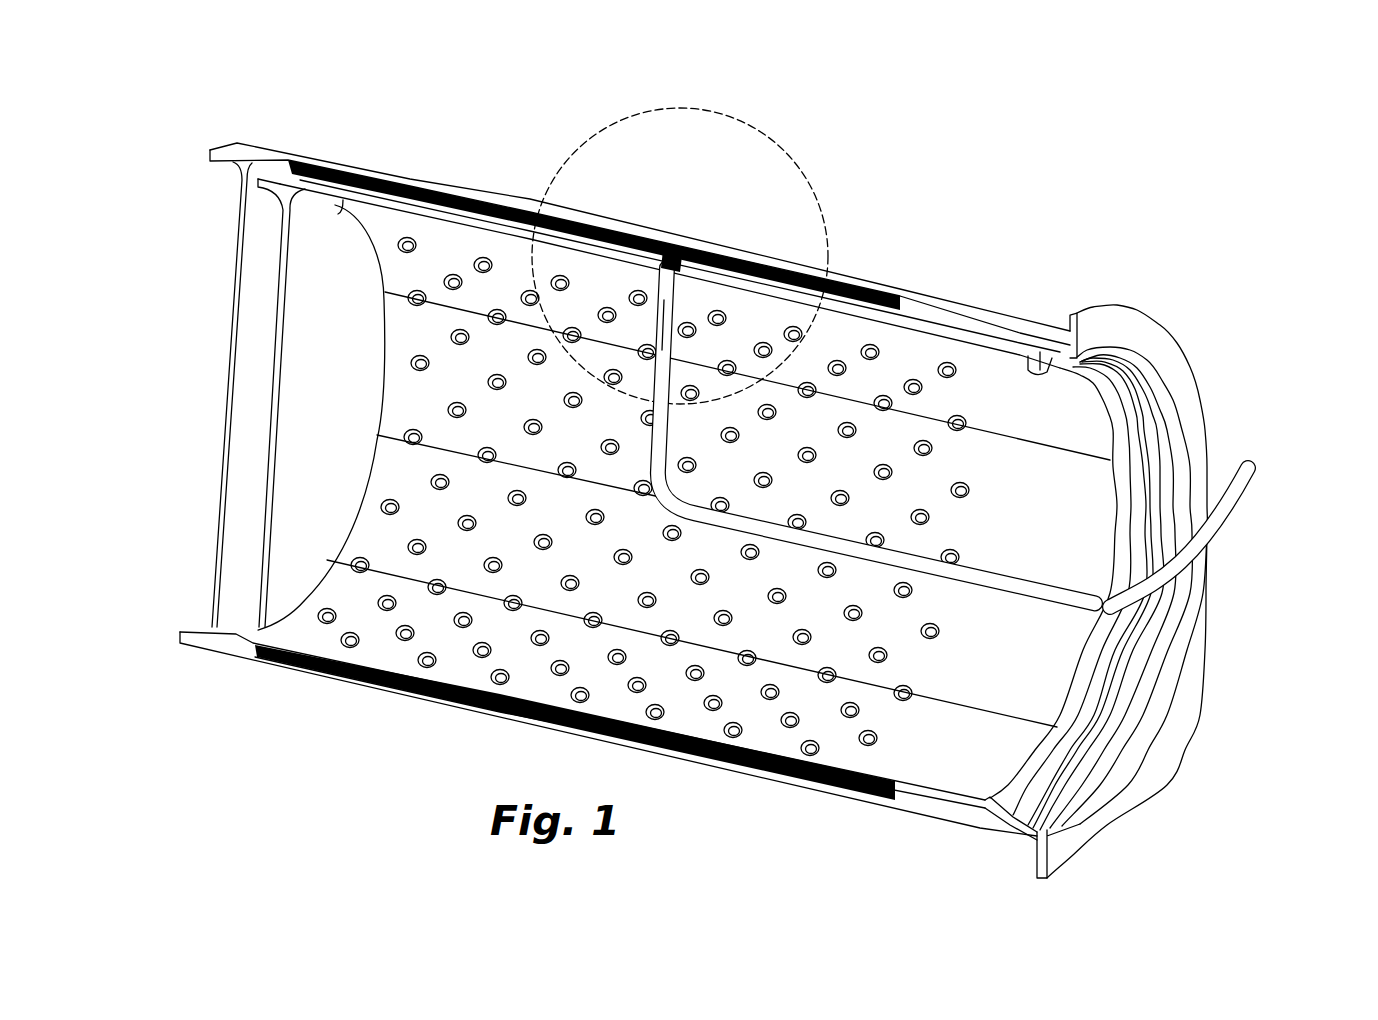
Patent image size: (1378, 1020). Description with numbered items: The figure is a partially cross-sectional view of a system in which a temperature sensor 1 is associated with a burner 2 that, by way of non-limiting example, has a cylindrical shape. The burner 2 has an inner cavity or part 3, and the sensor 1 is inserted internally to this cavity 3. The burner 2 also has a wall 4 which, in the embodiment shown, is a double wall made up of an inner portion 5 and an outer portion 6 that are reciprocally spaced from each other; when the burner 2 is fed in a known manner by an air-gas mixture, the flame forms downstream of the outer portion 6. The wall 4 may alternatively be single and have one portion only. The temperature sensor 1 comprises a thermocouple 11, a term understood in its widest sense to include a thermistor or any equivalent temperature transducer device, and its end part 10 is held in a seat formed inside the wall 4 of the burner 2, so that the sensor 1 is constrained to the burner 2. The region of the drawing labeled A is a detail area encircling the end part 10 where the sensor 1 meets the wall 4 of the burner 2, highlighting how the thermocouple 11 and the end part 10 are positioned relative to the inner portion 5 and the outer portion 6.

The temperature sensor 1 is at (690, 306).
The burner 2 is at (177, 147).
The inner cavity 3 is at (333, 414).
The wall 4 is at (303, 65).
The inner portion 5 is at (343, 200).
The outer portion 6 is at (407, 193).
The end part 10 is at (668, 255).
The thermocouple 11 is at (658, 330).
The detail region A is at (777, 141).